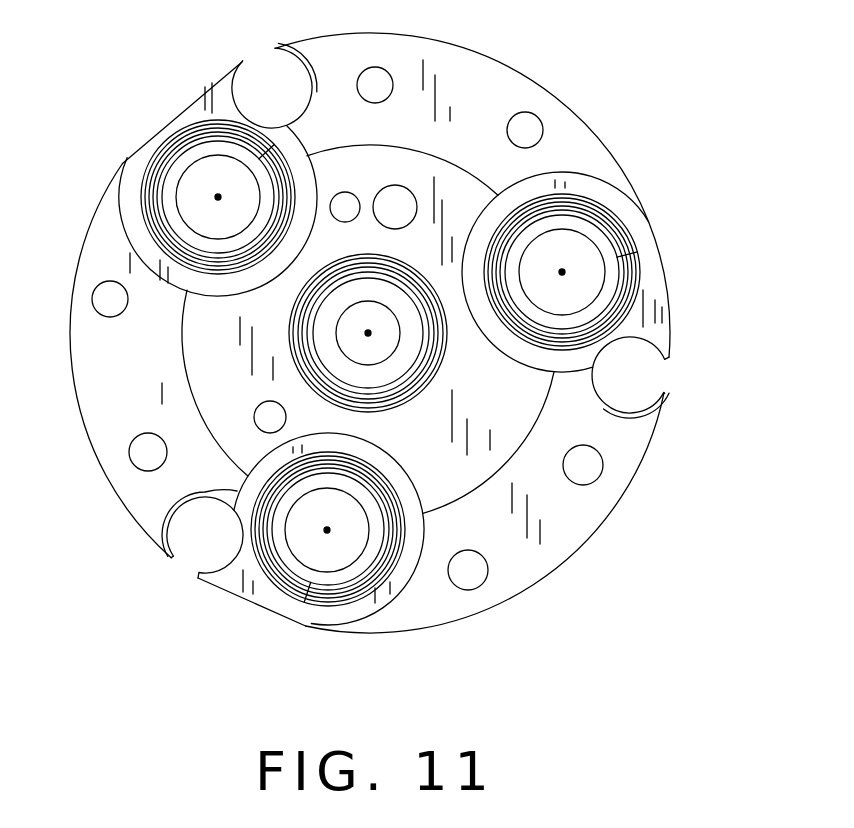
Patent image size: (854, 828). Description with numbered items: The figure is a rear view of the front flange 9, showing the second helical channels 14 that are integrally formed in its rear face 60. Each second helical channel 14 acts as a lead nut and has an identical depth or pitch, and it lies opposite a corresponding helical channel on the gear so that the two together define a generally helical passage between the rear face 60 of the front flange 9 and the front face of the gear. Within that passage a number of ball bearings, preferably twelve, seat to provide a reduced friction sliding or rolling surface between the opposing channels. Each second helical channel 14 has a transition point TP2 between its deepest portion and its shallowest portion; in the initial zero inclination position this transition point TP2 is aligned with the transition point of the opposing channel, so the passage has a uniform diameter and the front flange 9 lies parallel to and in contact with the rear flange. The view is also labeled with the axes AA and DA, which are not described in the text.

The front flange 9 is at (384, 344).
The rear face 60 is at (478, 82).
The second helical channel 14 is at (225, 138).
The transition point TP2 is at (183, 157).
The tool axis AA is at (218, 197).
The drive axis DA is at (368, 333).